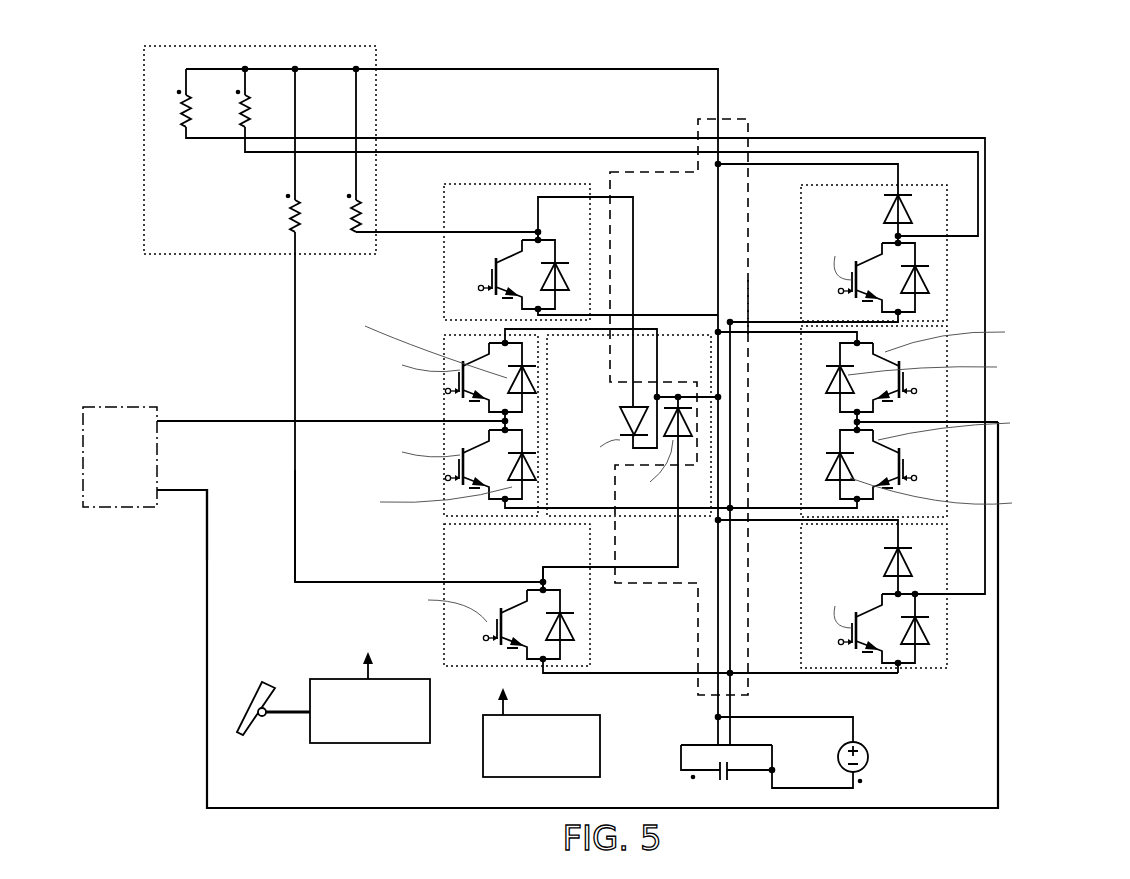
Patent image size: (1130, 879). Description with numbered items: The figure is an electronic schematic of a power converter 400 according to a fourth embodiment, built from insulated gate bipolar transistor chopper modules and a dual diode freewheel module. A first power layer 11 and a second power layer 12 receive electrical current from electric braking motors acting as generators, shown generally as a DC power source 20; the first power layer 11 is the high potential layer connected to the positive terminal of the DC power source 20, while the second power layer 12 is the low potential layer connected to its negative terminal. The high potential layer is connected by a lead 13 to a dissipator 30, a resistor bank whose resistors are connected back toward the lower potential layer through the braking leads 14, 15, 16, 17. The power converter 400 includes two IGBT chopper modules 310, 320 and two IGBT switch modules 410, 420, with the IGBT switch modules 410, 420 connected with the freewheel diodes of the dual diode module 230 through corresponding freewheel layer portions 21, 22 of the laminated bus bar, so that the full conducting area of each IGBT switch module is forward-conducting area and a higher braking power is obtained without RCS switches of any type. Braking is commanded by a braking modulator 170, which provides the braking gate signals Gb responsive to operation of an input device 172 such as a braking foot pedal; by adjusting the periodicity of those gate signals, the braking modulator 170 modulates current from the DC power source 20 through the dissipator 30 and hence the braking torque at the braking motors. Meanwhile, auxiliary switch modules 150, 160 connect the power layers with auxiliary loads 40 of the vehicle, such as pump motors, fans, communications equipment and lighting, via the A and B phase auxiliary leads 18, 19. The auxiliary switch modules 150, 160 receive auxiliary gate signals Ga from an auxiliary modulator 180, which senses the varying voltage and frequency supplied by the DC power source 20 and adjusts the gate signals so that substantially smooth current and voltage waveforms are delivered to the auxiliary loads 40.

The power converter 400 is at (893, 56).
The dissipator 30 is at (144, 66).
The lead 13 is at (462, 69).
The braking lead 17 is at (413, 138).
The braking lead 16 is at (428, 152).
The braking lead 14 is at (394, 232).
The IGBT switch module 410 is at (538, 184).
The freewheel layer portion 22 is at (633, 214).
The first power layer 11 is at (720, 258).
The second power layer 12 is at (735, 311).
The dual diode module 230 is at (700, 332).
The IGBT chopper module 310 is at (820, 185).
The auxiliary switch module 150 is at (444, 335).
The auxiliary switch module 160 is at (801, 415).
The IGBT chopper module 320 is at (801, 593).
The auxiliary loads 40 is at (108, 467).
The A phase auxiliary lead 18 is at (184, 422).
The B phase auxiliary lead 19 is at (177, 492).
The braking lead 15 is at (295, 512).
The freewheel layer portion 21 is at (568, 567).
The IGBT switch module 420 is at (595, 643).
The input device 172 is at (278, 678).
The braking modulator 170 is at (368, 747).
The auxiliary modulator 180 is at (600, 745).
The DC power source 20 is at (868, 752).